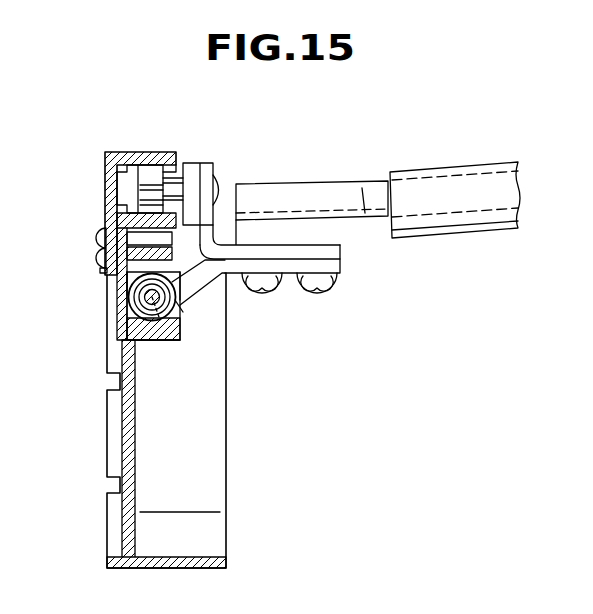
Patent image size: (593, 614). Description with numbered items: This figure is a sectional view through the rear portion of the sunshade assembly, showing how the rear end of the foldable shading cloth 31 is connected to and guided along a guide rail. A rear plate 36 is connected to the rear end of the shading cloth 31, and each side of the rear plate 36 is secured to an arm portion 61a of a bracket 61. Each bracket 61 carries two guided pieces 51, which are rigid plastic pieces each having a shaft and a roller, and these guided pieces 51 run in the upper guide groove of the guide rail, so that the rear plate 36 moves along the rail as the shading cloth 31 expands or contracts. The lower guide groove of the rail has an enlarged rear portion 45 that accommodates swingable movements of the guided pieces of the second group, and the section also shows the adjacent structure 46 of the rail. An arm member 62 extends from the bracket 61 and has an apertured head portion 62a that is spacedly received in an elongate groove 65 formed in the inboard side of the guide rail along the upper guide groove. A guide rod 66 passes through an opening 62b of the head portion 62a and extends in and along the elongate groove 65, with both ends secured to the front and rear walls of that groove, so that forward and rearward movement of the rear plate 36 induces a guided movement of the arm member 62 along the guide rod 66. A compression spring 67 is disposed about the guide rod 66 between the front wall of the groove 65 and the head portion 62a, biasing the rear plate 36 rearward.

The shading cloth 31 is at (450, 150).
The rear plate 36 is at (308, 190).
The enlarged rear portion 45 is at (190, 459).
The stopper 46 is at (108, 278).
The guided piece 51 is at (146, 191).
The bracket 61 is at (224, 157).
The arm portion 61a is at (330, 250).
The arm member 62 is at (240, 290).
The head portion 62a is at (135, 290).
The opening 62b is at (170, 306).
The elongate groove 65 is at (175, 322).
The guide rod 66 is at (130, 303).
The compression spring 67 is at (150, 335).